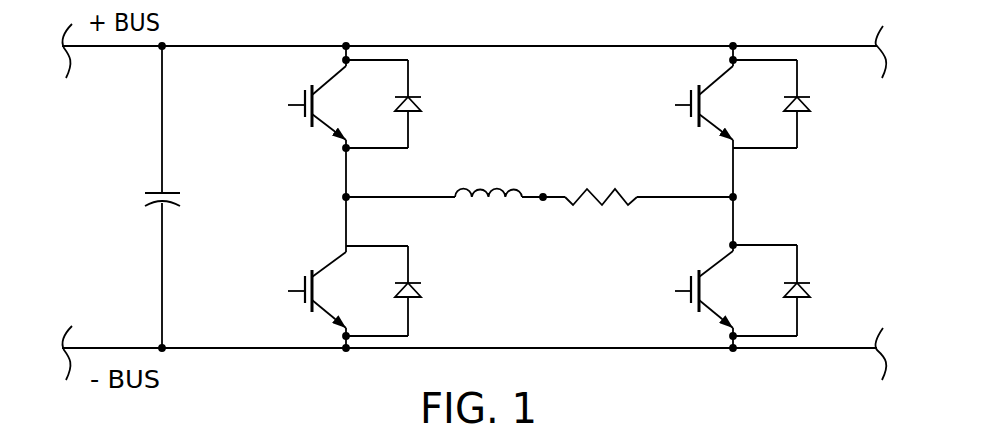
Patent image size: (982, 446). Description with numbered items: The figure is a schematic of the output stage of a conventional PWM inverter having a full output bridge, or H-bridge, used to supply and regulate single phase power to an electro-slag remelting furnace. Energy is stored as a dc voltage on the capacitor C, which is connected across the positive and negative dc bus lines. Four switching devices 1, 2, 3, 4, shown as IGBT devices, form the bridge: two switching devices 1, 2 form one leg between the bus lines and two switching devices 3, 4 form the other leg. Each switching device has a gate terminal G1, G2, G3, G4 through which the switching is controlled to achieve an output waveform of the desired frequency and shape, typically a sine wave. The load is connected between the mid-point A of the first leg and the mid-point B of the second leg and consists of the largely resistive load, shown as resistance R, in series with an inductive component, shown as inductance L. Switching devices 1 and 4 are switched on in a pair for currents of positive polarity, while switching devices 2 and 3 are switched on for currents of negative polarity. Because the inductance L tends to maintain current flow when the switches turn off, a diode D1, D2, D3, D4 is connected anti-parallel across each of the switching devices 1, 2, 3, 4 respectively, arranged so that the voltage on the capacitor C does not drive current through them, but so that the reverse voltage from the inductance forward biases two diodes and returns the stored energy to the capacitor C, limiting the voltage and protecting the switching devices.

The switching device 1 is at (322, 78).
The switching device 2 is at (322, 258).
The switching device 3 is at (712, 78).
The switching device 4 is at (711, 258).
The gate of first switch G1 is at (284, 96).
The gate of second switch G2 is at (284, 282).
The gate of third switch G3 is at (670, 96).
The gate of fourth switch G4 is at (670, 282).
The diode D1 is at (425, 104).
The diode D2 is at (425, 291).
The diode D3 is at (814, 104).
The diode D4 is at (814, 290).
The capacitor C is at (173, 197).
The inductance L is at (488, 217).
The resistance R is at (601, 217).
The output node A is at (346, 197).
The output node B is at (740, 197).